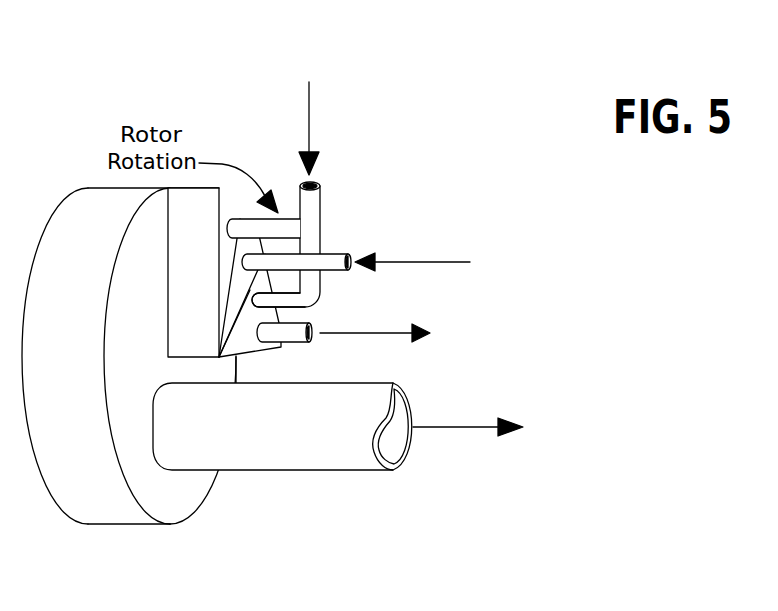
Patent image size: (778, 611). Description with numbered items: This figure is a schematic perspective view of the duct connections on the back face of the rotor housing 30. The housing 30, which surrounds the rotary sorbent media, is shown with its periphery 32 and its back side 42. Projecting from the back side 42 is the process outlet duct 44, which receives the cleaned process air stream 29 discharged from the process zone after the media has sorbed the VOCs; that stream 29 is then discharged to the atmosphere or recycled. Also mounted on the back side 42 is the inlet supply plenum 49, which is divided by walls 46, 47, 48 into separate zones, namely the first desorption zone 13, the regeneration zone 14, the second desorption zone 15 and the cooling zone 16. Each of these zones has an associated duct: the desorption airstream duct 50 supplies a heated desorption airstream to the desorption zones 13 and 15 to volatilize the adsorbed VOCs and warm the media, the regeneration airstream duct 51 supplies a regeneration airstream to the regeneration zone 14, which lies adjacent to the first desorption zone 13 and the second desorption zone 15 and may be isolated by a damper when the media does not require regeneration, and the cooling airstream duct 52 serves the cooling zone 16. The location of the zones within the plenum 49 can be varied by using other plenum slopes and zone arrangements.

The first desorption zone 13 is at (229, 212).
The regeneration zone 14 is at (246, 218).
The second desorption zone 15 is at (265, 286).
The cooling zone 16 is at (276, 313).
The cleaned process air stream 29 is at (432, 428).
The housing 30 is at (88, 515).
The periphery 32 is at (113, 508).
The back side of housing 42 is at (193, 502).
The process outlet duct 44 is at (312, 458).
The wall 46 is at (226, 257).
The wall 47 is at (237, 293).
The wall 48 is at (236, 323).
The inlet supply plenum 49 is at (278, 349).
The desorption airstream duct 50 is at (321, 205).
The regeneration airstream duct 51 is at (334, 251).
The cooling airstream duct 52 is at (313, 329).